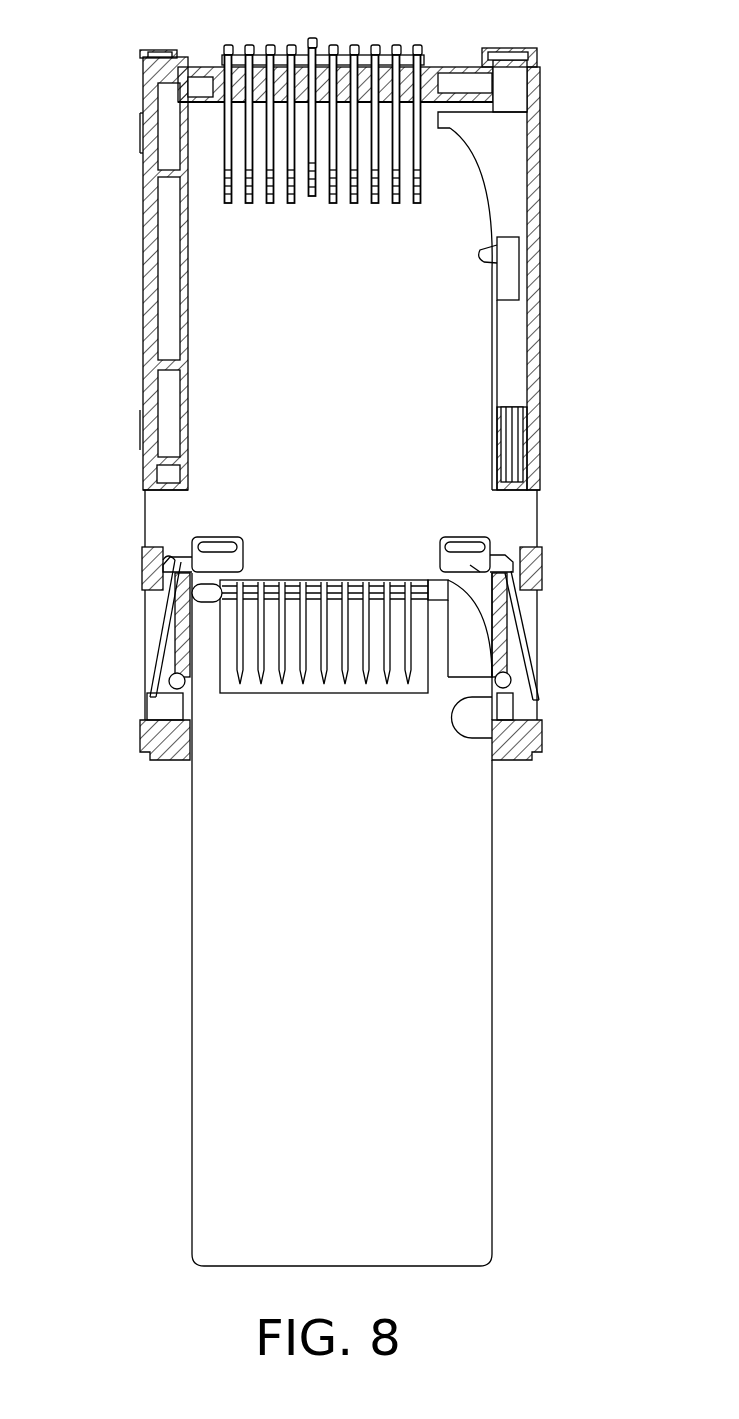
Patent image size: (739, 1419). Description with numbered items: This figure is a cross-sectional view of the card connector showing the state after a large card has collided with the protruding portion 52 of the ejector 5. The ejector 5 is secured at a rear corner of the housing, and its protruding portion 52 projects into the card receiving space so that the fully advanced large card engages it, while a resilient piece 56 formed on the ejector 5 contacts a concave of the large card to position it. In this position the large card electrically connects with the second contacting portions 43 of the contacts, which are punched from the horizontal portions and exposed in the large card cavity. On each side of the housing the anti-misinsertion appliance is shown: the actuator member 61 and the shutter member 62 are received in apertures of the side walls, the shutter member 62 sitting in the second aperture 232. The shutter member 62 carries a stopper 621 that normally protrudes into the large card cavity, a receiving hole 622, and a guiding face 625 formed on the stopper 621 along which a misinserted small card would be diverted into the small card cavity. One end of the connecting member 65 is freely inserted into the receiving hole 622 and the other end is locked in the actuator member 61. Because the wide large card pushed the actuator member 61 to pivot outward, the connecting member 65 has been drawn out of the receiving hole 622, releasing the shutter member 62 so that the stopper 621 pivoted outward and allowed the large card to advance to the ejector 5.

The ejector 5 is at (512, 170).
The protruding portion 52 is at (505, 62).
The second contacting portion 43 is at (340, 180).
The resilient piece 56 is at (480, 258).
The second aperture 232 is at (165, 518).
The shutter member 62 is at (218, 540).
The stopper 621 is at (450, 540).
The guiding face 625 is at (470, 563).
The receiving hole 622 is at (150, 565).
The connecting member 65 is at (165, 620).
The actuator member 61 is at (170, 690).